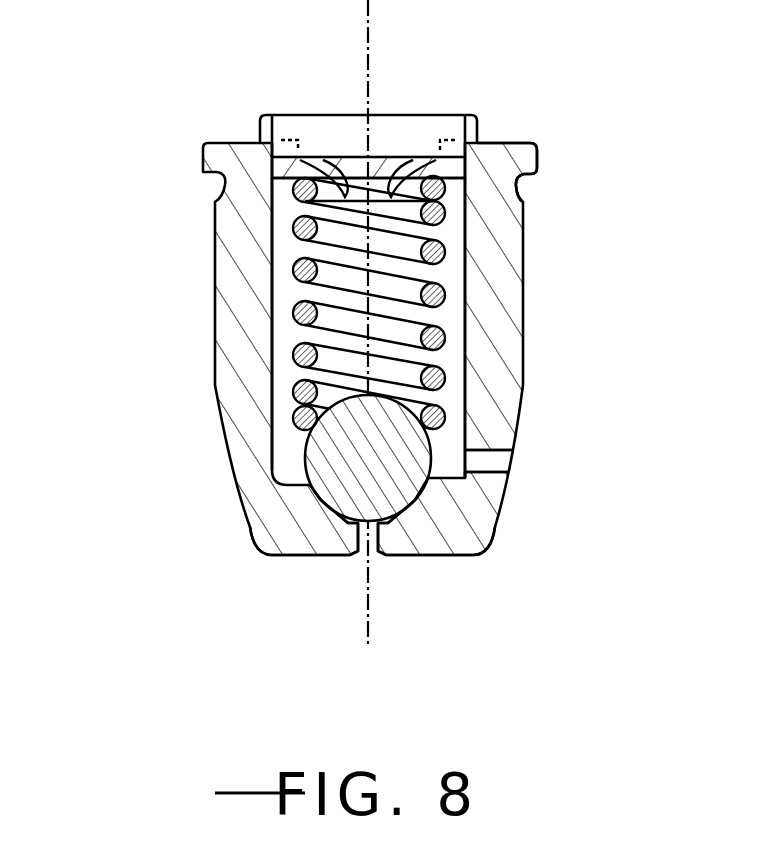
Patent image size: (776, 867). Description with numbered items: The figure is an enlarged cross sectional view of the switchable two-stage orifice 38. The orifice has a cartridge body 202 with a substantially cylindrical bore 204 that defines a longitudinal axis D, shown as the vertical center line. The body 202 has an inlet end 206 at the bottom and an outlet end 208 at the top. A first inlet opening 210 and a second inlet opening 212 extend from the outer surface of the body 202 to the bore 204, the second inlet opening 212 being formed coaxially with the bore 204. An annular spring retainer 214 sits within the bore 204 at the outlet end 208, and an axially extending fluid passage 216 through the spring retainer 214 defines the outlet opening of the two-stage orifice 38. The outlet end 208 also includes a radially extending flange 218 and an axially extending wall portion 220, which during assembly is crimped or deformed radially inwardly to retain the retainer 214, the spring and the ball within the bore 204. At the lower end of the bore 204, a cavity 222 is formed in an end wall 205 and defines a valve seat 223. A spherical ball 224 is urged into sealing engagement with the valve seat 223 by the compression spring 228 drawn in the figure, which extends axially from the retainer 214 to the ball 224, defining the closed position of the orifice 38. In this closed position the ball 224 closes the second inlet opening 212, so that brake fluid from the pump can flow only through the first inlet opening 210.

The two-stage orifice 38 is at (157, 85).
The longitudinal axis D is at (372, 14).
The cartridge body 202 is at (238, 439).
The bore 204 is at (460, 226).
The end wall 205 is at (447, 477).
The inlet end 206 is at (277, 557).
The outlet end 208 is at (427, 115).
The first inlet opening 210 is at (480, 463).
The second inlet opening 212 is at (360, 540).
The spring retainer 214 is at (285, 168).
The fluid passage 216 is at (345, 172).
The flange 218 is at (526, 163).
The wall portion 220 is at (288, 140).
The cavity 222 is at (393, 522).
The valve seat 223 is at (430, 490).
The ball 224 is at (345, 462).
The spring 228 is at (251, 366).